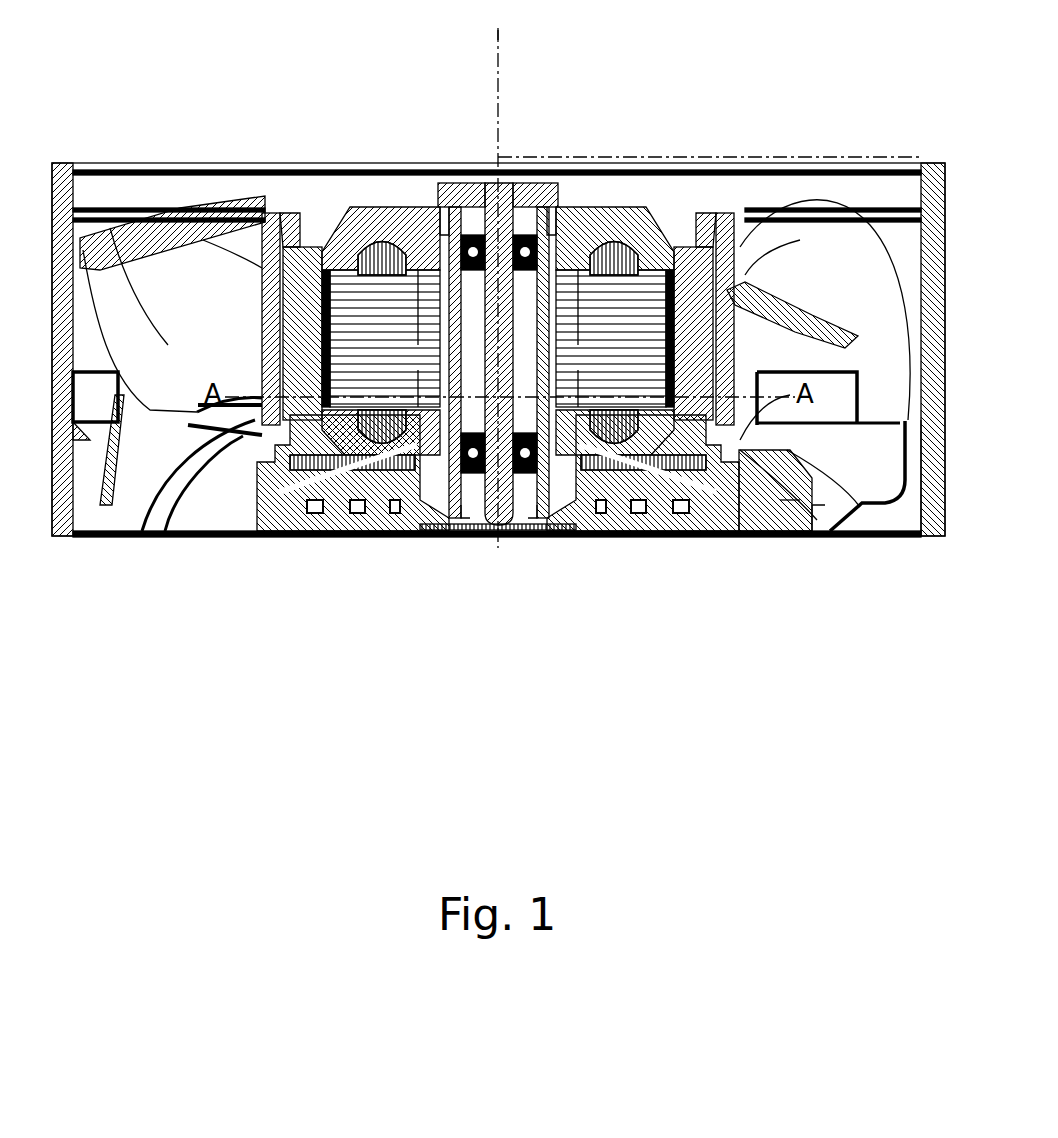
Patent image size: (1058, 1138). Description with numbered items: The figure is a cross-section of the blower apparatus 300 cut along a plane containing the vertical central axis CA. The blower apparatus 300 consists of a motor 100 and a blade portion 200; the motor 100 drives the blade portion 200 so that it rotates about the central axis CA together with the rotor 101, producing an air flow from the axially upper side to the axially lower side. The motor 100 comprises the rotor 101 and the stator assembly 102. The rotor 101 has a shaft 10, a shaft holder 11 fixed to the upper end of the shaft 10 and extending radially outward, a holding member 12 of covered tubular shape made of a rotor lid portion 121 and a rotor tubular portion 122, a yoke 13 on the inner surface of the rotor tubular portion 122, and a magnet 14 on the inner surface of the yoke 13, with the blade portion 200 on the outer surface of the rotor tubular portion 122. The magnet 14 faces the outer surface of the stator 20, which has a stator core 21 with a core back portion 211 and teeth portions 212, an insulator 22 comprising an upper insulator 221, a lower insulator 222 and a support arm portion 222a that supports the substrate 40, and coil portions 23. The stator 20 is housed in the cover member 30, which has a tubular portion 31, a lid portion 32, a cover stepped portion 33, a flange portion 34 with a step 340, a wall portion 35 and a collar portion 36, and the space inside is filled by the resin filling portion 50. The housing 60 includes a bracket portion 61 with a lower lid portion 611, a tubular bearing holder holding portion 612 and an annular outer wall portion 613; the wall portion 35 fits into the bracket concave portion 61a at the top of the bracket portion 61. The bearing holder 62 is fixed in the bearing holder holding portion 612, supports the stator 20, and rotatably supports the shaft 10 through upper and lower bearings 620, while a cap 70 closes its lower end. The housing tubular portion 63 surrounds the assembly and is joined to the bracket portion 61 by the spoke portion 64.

The shaft 10 is at (505, 190).
The shaft holder 11 is at (557, 265).
The holding member 12 is at (672, 97).
The rotor lid portion 121 is at (630, 240).
The rotor tubular portion 122 is at (705, 255).
The yoke 13 is at (736, 245).
The magnet 14 is at (762, 300).
The stator 20 is at (312, 58).
The stator core 21 is at (438, 195).
The insulator 22 is at (430, 205).
The coil portions 23 is at (395, 212).
The cover member 30 is at (430, 261).
The tubular portion 31 is at (262, 350).
The lid portion 32 is at (362, 212).
The cover stepped portion 33 is at (288, 300).
The flange portion 34 is at (850, 470).
The wall portion 35 is at (705, 478).
The collar portion 36 is at (476, 205).
The substrate 40 is at (300, 465).
The filling portion 50 is at (534, 248).
The housing 60 is at (63, 542).
The bracket portion 61 is at (362, 675).
The lower lid portion 611 is at (345, 533).
The bearing holder holding portion 612 is at (600, 533).
The outer wall portion 613 is at (760, 533).
The bracket concave portion 61a is at (810, 535).
The bearing holder 62 is at (476, 505).
The bearings 620 is at (534, 478).
The housing tubular portion 63 is at (929, 540).
The spoke portion 64 is at (788, 525).
The cap 70 is at (576, 530).
The motor 100 is at (252, 486).
The rotor 101 is at (520, 47).
The stator assembly 102 is at (326, 226).
The blade portion 200 is at (885, 200).
The core back portion 211 is at (578, 262).
The teeth portions 212 is at (603, 252).
The upper insulator 221 is at (262, 262).
The lower insulator 222 is at (268, 450).
The support arm portion 222a is at (445, 522).
The blower apparatus 300 is at (103, 120).
The step 340 is at (680, 525).
The central axis CA is at (497, 21).